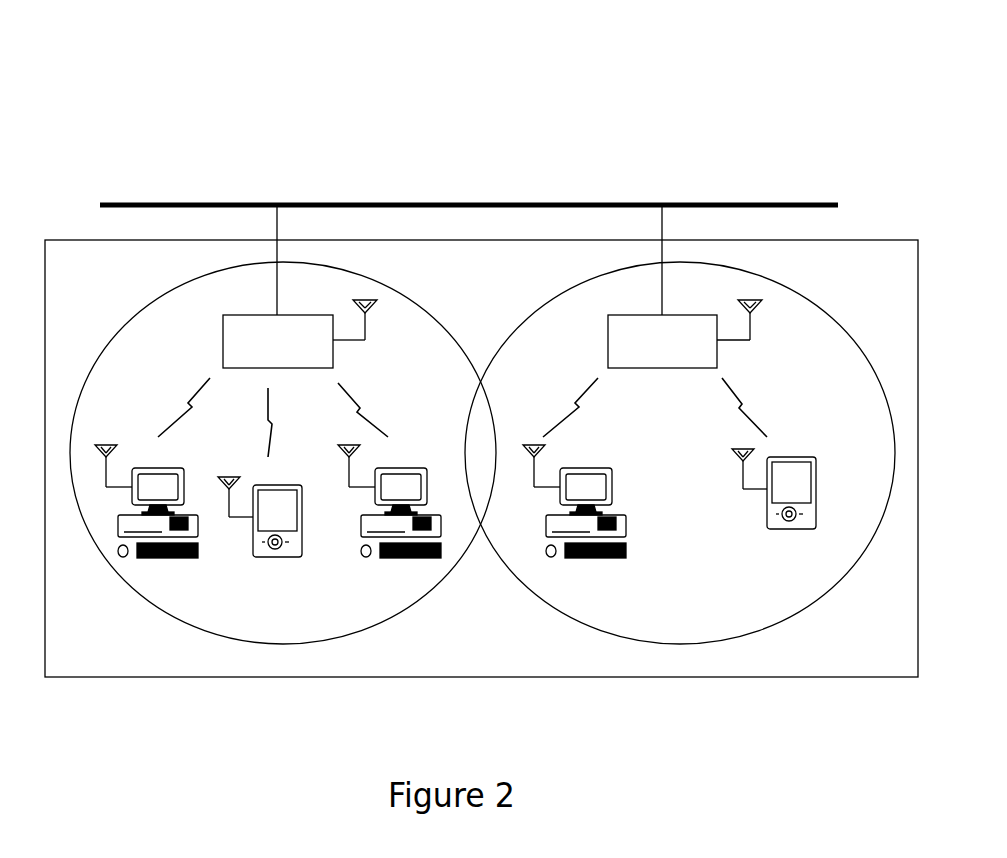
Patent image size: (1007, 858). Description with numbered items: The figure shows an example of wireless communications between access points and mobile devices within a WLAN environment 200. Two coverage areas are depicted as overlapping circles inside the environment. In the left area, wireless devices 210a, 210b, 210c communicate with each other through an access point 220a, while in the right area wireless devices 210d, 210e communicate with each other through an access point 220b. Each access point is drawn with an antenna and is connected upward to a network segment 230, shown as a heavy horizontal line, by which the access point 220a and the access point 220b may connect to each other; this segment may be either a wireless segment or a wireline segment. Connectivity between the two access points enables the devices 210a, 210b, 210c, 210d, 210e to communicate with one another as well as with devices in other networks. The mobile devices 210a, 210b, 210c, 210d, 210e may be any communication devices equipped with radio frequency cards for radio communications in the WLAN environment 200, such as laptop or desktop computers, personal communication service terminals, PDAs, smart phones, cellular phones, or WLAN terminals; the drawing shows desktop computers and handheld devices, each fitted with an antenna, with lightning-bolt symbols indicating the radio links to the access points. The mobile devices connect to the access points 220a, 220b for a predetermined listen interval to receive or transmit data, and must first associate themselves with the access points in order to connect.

The WLAN environment 200 is at (478, 83).
The network segment 230 is at (458, 203).
The access point 220a is at (333, 352).
The access point 220b is at (717, 355).
The wireless device 210a is at (143, 468).
The wireless device 210b is at (276, 558).
The wireless device 210c is at (420, 468).
The wireless device 210d is at (612, 563).
The wireless device 210e is at (798, 530).